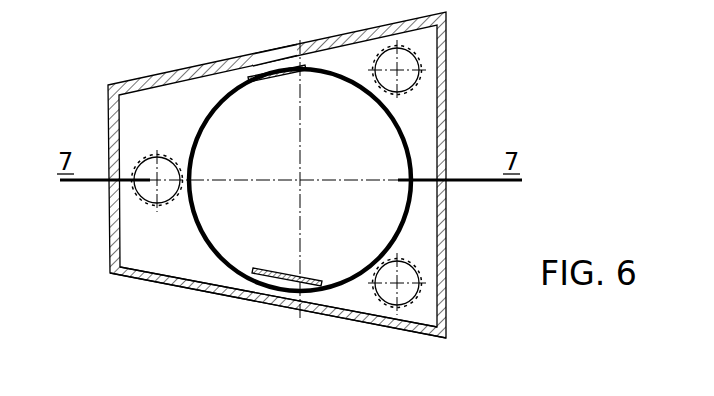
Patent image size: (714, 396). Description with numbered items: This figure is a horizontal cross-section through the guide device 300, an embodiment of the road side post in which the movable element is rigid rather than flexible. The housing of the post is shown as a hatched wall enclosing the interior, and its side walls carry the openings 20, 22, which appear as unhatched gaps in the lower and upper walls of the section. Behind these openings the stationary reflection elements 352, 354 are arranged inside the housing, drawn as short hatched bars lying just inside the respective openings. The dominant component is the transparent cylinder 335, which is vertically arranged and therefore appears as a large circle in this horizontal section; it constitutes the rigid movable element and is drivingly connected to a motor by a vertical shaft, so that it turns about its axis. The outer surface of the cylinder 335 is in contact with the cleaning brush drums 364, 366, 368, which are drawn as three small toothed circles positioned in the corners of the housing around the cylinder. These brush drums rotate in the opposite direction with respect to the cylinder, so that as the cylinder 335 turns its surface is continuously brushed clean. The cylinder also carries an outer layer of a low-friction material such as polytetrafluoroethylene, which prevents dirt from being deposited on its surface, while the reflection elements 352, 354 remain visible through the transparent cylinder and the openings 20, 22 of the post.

The guide device 300 is at (168, 97).
The opening 22 is at (266, 53).
The opening 20 is at (290, 300).
The transparent cylinder 335 is at (412, 128).
The stationary reflection element 352 is at (273, 84).
The stationary reflection element 354 is at (268, 268).
The cleaning brush drum 368 is at (405, 61).
The cleaning brush drum 364 is at (153, 200).
The cleaning brush drum 366 is at (408, 295).